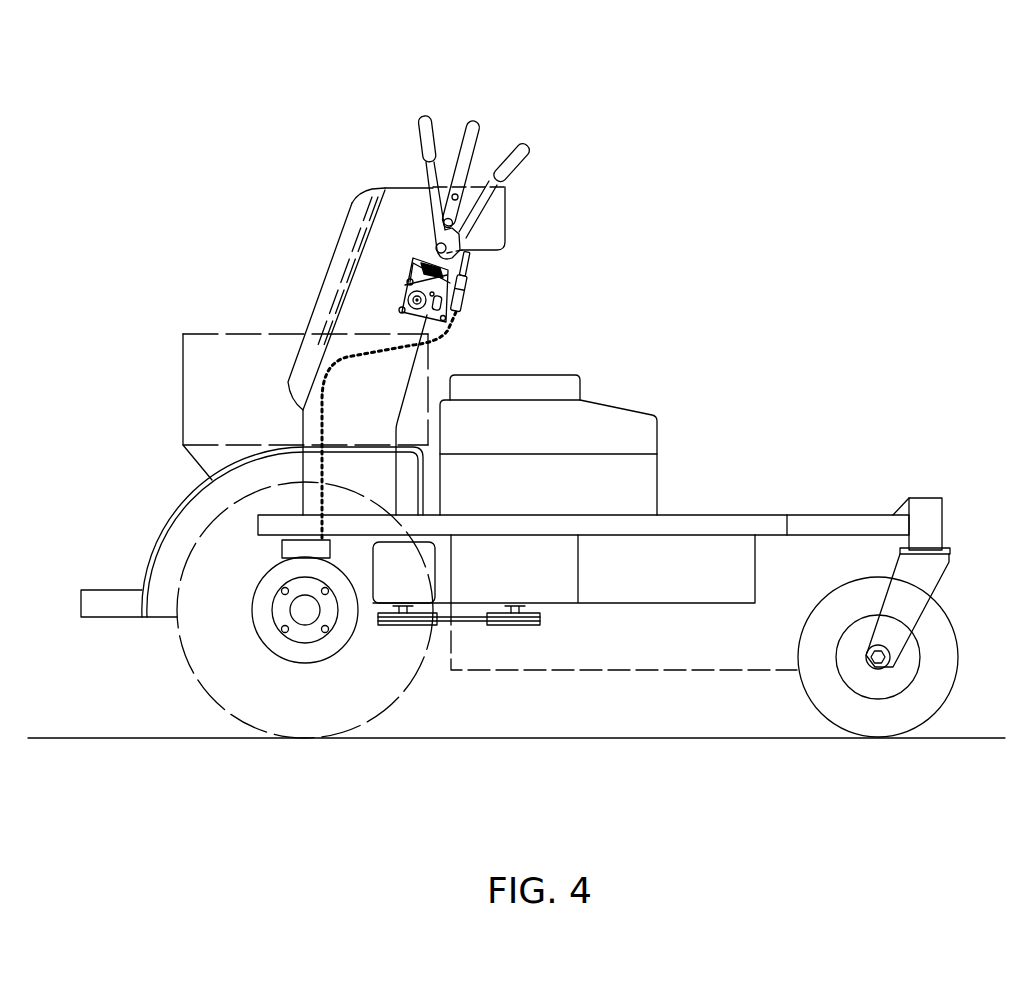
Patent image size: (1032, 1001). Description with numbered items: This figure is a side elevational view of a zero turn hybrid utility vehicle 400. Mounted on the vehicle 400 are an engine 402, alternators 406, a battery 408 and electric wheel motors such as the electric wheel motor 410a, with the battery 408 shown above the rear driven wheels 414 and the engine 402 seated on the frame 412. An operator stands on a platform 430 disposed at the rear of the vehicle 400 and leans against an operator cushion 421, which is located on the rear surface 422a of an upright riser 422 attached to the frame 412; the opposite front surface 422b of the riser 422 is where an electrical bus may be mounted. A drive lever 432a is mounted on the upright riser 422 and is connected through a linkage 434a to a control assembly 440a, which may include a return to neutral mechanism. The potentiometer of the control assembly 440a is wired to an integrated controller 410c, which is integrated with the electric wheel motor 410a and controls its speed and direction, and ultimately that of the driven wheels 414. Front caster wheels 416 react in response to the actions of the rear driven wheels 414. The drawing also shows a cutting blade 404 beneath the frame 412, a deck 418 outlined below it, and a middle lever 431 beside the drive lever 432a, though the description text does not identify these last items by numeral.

The zero turn hybrid utility vehicle 400 is at (753, 284).
The engine 402 is at (565, 494).
The cutting blade 404 is at (465, 624).
The alternators 406 is at (435, 558).
The battery 408 is at (210, 332).
The electric wheel motor 410a is at (343, 652).
The integrated controllers 410c is at (282, 548).
The frame 412 is at (725, 514).
The driven wheels 414 is at (207, 693).
The front caster wheels 416 is at (808, 703).
The mower deck 418 is at (601, 670).
The operator cushion 421 is at (342, 232).
The upright riser 422 is at (414, 188).
The rear surface 422a is at (363, 253).
The front surface 422b is at (337, 310).
The platform 430 is at (112, 590).
The control lever 431 is at (476, 128).
The drive lever 432a is at (422, 122).
The linkage 434a is at (467, 283).
The control assembly 440a is at (415, 241).